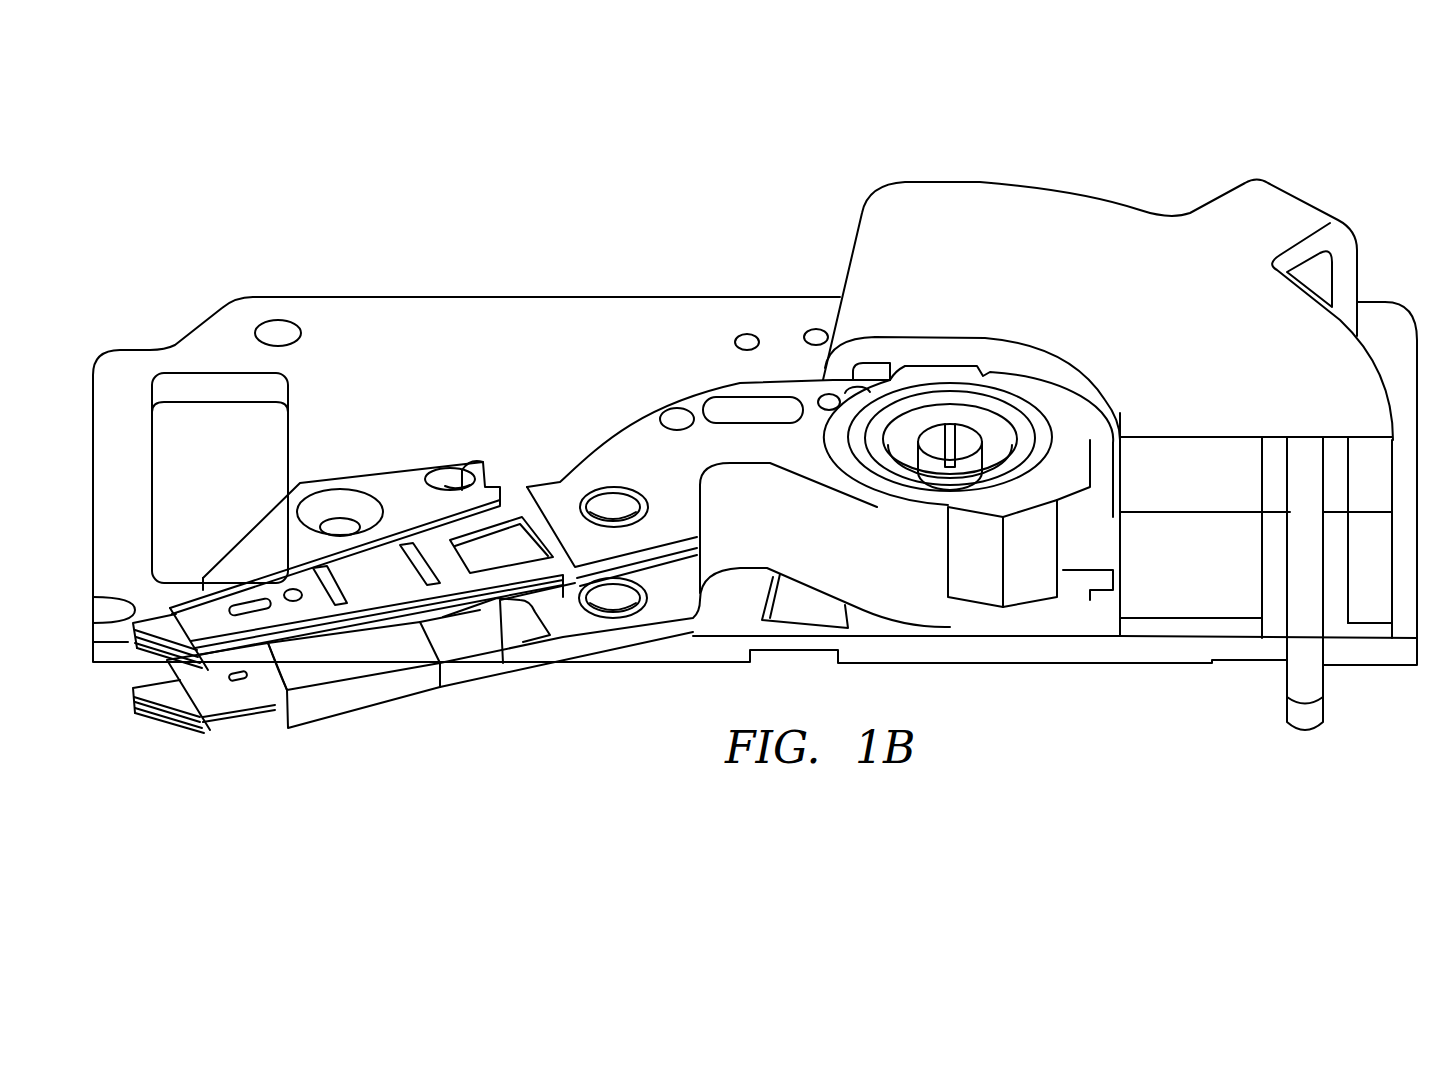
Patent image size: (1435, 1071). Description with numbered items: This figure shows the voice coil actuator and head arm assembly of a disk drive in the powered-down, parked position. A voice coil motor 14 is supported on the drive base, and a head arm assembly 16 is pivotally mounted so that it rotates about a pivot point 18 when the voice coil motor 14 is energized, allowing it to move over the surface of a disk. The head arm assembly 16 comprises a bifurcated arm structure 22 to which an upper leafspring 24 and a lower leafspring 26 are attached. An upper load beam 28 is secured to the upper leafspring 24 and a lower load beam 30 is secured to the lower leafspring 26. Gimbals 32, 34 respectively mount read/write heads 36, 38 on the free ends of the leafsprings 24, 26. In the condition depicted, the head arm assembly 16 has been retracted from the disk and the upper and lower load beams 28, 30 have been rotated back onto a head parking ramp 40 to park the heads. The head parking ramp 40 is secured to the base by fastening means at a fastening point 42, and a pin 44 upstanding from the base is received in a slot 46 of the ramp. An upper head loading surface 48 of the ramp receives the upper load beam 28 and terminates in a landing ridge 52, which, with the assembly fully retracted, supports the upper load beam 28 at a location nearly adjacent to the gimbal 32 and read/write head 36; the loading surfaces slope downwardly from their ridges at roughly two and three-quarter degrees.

The voice coil motor 14 is at (1107, 228).
The head arm assembly 16 is at (569, 332).
The pivot point 18 is at (935, 425).
The bifurcated arm structure 22 is at (602, 473).
The upper leafspring 24 is at (388, 592).
The lower leafspring 26 is at (565, 628).
The upper load beam 28 is at (352, 636).
The lower load beam 30 is at (213, 720).
The gimbal 32 is at (155, 623).
The gimbal 34 is at (140, 716).
The read/write head 36 is at (130, 643).
The read/write head 38 is at (133, 692).
The head parking ramp 40 is at (394, 494).
The fastening point 42 is at (340, 528).
The pin 44 is at (462, 470).
The slot 46 is at (440, 472).
The upper head loading surface 48 is at (327, 677).
The landing ridge 52 is at (258, 713).